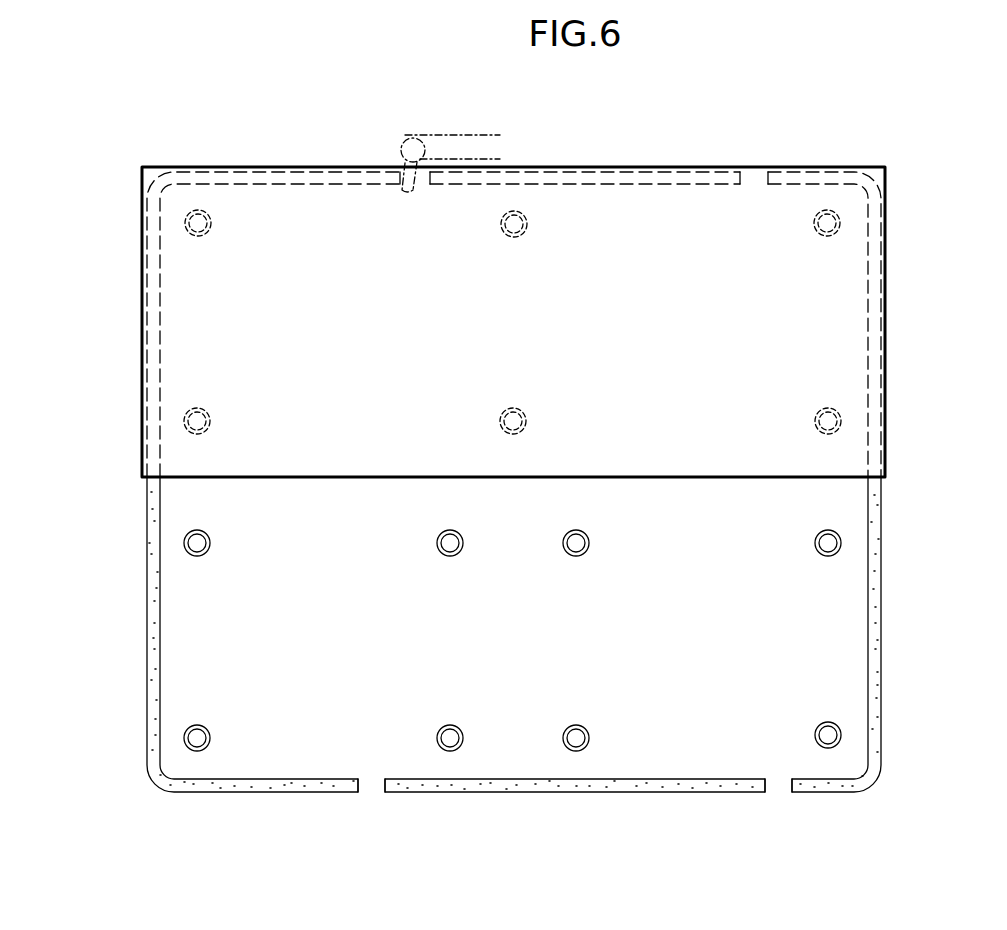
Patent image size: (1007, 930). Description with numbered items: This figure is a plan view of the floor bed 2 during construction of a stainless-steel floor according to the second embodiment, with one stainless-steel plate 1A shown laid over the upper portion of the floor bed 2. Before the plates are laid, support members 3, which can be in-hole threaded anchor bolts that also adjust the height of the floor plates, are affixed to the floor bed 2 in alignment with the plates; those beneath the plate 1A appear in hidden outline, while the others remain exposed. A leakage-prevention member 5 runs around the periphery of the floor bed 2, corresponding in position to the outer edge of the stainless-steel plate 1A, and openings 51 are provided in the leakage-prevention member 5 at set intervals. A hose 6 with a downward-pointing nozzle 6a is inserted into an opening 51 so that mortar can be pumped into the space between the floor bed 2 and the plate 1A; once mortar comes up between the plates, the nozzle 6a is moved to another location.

The stainless-steel plate 1A is at (803, 325).
The floor bed 2 is at (533, 470).
The support member 3 is at (838, 222).
The leakage-prevention member 5 is at (296, 178).
The opening 51 is at (425, 182).
The hose 6 is at (430, 180).
The nozzle 6a is at (405, 176).